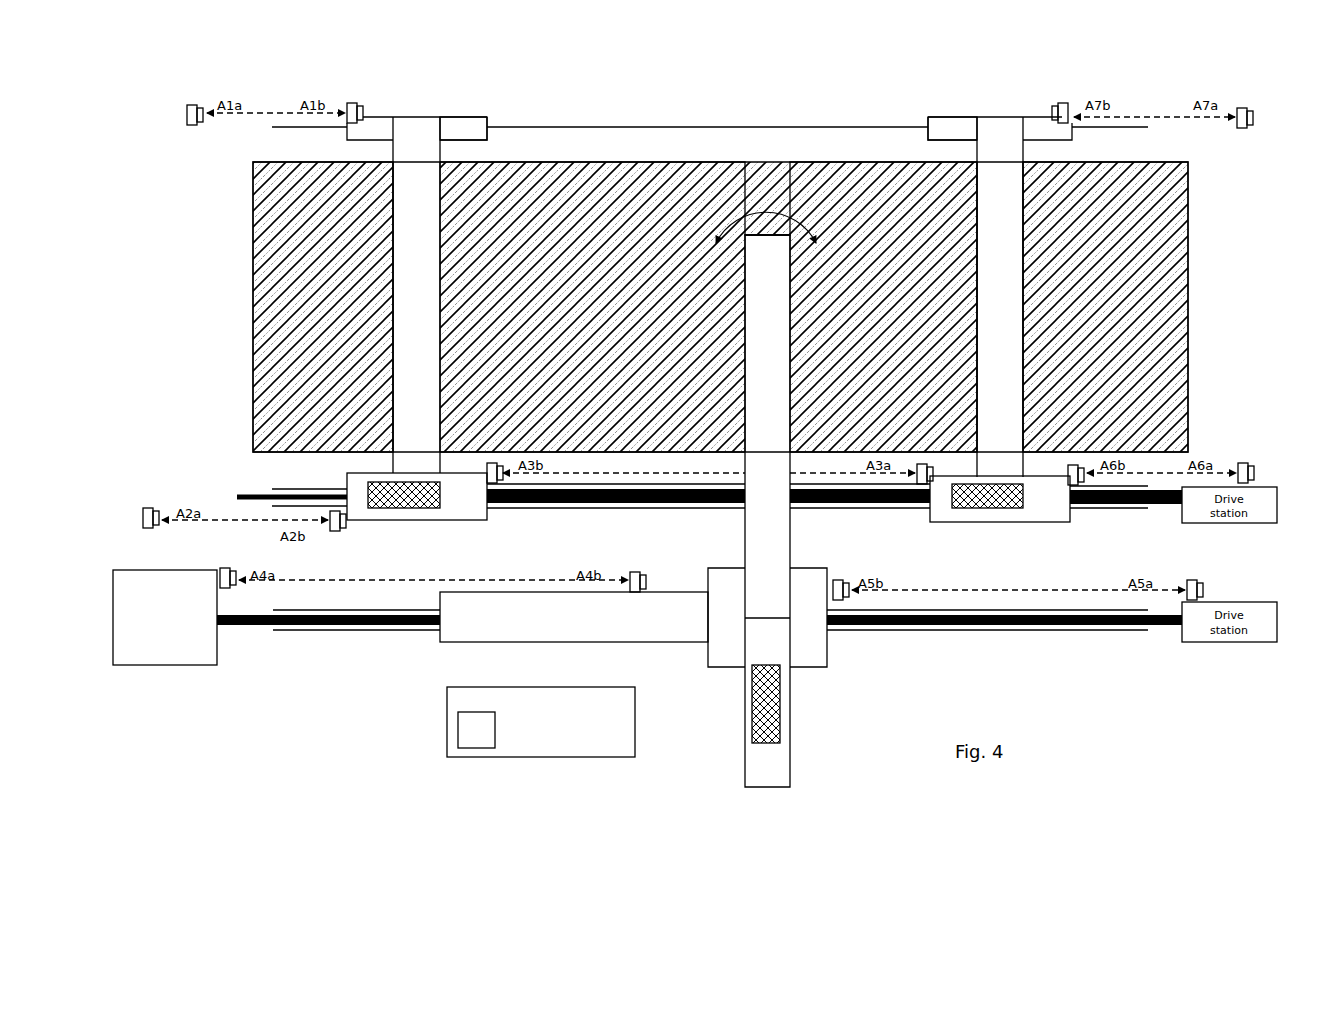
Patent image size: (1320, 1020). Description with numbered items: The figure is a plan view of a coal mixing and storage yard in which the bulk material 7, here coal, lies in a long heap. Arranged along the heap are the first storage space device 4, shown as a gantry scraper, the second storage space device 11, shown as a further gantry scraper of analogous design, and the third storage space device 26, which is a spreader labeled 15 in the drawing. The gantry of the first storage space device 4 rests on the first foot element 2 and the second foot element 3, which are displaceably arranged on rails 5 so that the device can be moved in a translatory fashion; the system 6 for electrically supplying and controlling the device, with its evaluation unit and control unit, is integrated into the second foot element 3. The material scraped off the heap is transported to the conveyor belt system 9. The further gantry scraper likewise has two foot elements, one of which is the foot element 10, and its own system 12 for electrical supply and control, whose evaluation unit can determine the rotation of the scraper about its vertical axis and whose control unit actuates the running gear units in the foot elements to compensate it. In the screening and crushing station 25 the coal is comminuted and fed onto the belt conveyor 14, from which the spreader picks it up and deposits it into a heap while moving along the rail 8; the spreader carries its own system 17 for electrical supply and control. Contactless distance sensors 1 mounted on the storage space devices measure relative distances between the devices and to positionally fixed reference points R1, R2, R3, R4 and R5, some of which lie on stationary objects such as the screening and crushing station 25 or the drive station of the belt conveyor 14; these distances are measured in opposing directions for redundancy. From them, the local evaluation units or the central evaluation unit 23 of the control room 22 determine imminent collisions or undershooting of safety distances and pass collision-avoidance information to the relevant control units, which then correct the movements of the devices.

The contactless distance sensor 1 is at (200, 126).
The first foot element 2 is at (470, 117).
The second foot element 3 is at (447, 521).
The first storage space device 4 is at (447, 332).
The rails 5 is at (540, 127).
The system for electrically supplying and controlling the first storage space device 6 is at (380, 483).
The bulk material 7 is at (256, 296).
The rail 8 is at (546, 509).
The conveyor belt system 9 is at (956, 117).
The foot element 10 is at (1040, 523).
The second storage space device 11 is at (1036, 303).
The system for electrically supplying and controlling the gantry scraper 12 is at (975, 510).
The belt conveyor 14 is at (258, 626).
The spreader 15 is at (797, 366).
The system for electrically supplying and controlling the spreader 17 is at (782, 702).
The control room 22 is at (636, 722).
The evaluation unit 23 is at (480, 712).
The screening and crushing station 25 is at (182, 666).
The third storage space device 26 is at (690, 643).
The reader R1 is at (185, 118).
The reader R2 is at (146, 526).
The positionally fixed reference point R3 is at (218, 570).
The third positionally fixed reference point R4 is at (1256, 470).
The positionally fixed reference point R5 is at (1200, 590).